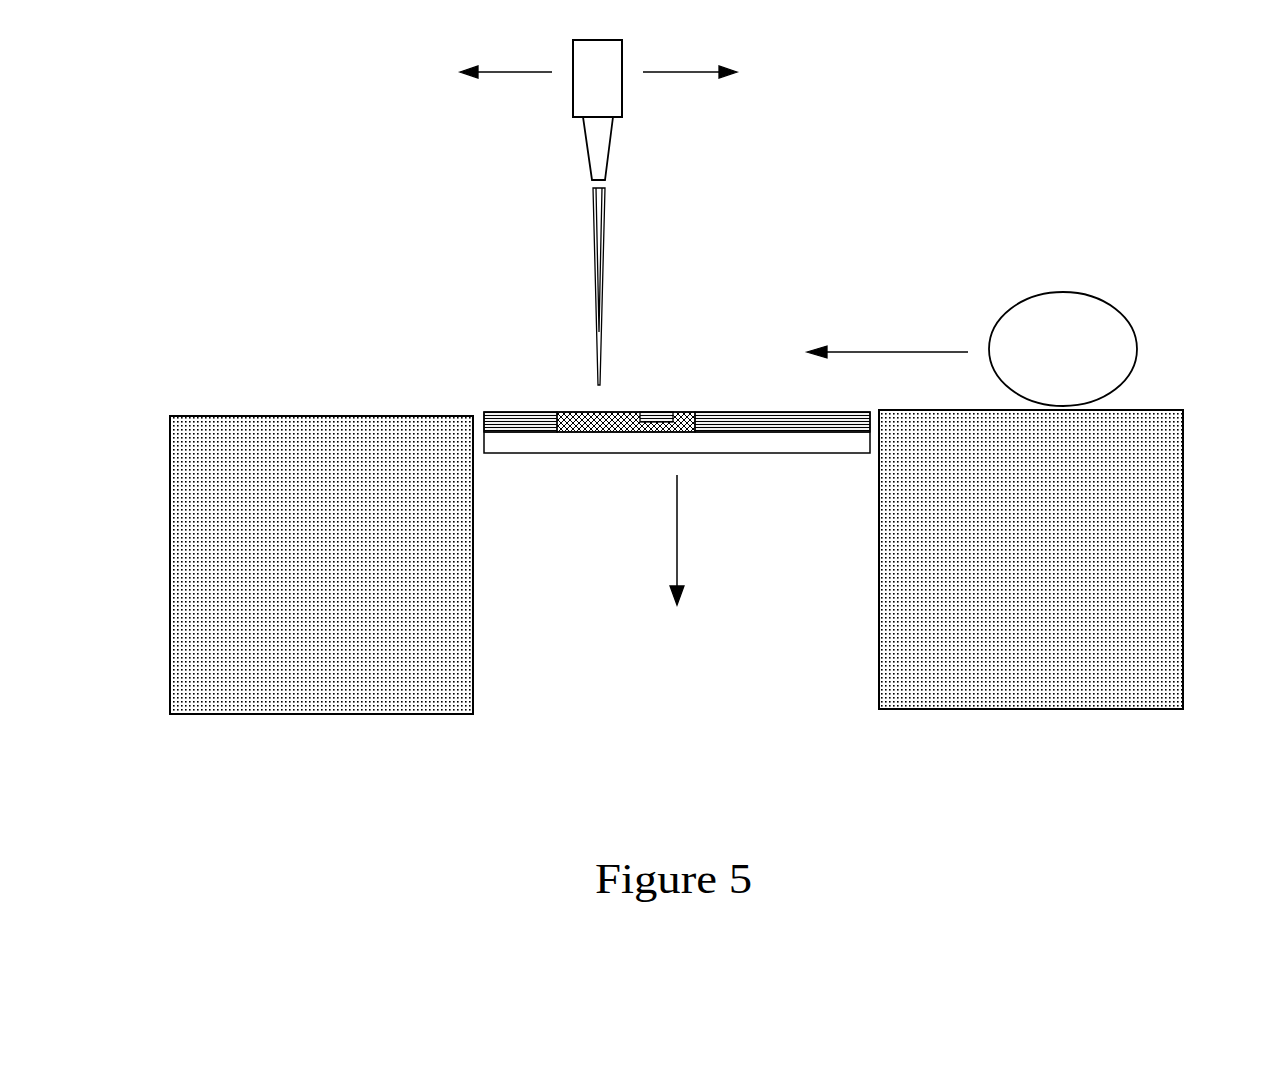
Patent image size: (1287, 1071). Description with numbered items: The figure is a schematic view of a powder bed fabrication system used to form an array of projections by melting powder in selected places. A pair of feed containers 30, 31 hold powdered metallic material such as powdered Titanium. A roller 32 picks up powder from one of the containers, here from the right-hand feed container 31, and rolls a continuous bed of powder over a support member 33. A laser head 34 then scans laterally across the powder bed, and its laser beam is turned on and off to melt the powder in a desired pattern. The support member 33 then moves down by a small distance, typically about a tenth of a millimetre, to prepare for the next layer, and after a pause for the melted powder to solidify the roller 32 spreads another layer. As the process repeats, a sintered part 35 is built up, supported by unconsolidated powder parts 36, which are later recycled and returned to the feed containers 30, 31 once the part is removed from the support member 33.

The feed container 30 is at (170, 561).
The feed container 31 is at (1183, 573).
The roller 32 is at (1065, 292).
The support member 33 is at (540, 455).
The laser head 34 is at (613, 102).
The sintered part 35 is at (612, 432).
The unconsolidated powder parts 36 is at (528, 412).